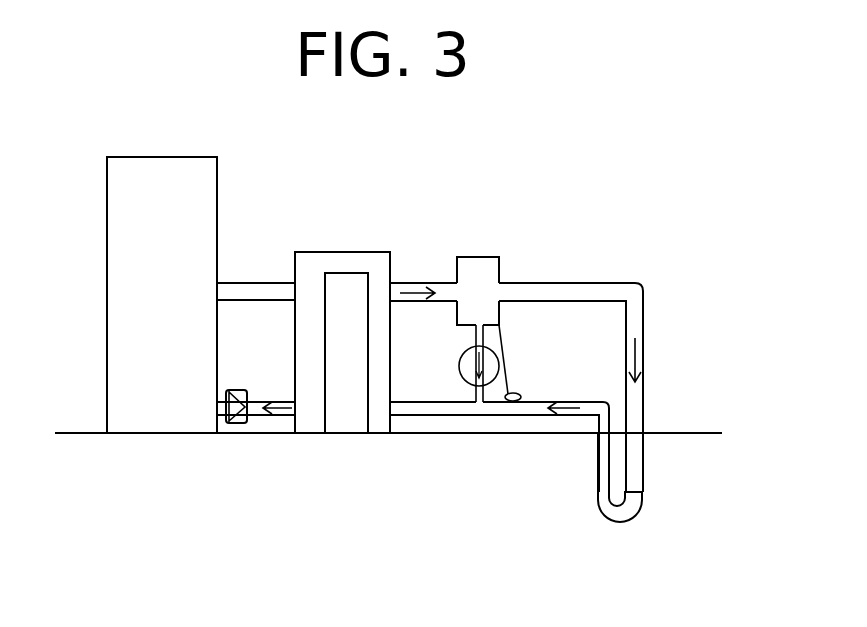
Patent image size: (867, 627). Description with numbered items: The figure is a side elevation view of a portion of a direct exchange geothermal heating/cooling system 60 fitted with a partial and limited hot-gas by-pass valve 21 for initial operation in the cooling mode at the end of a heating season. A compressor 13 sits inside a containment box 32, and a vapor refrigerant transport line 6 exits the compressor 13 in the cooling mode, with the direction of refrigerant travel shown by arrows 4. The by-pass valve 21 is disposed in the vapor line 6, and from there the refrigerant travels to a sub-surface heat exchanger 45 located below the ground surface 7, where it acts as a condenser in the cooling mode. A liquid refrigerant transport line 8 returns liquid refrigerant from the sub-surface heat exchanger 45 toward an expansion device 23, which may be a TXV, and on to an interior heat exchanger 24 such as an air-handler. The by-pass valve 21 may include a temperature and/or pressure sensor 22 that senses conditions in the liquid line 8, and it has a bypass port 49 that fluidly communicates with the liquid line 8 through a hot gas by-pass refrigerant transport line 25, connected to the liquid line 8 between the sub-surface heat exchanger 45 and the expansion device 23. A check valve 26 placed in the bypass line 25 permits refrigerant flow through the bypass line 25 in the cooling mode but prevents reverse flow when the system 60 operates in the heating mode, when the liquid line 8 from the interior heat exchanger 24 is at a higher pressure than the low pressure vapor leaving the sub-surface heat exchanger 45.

The DX geothermal heating/cooling system 60 is at (603, 179).
The interior heat exchanger 24 is at (193, 208).
The containment box 32 is at (343, 252).
The compressor 13 is at (342, 410).
The vapor refrigerant transport line 6 is at (257, 282).
The liquid refrigerant transport line 8 is at (263, 420).
The arrows 4 is at (413, 283).
The expansion device 23 is at (237, 390).
The partial and limited hot-gas by-pass valve 21 is at (477, 257).
The bypass port 49 is at (480, 322).
The hot gas by-pass refrigerant transport line 25 is at (472, 340).
The check valve 26 is at (462, 382).
The temperature and/or pressure sensor 22 is at (508, 401).
The ground surface 7 is at (668, 433).
The sub-surface heat exchanger 45 is at (645, 480).